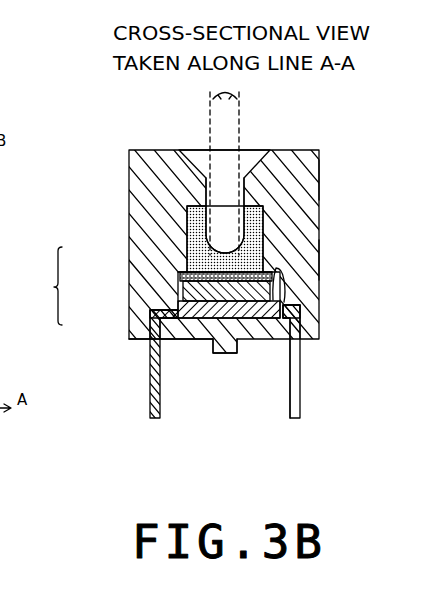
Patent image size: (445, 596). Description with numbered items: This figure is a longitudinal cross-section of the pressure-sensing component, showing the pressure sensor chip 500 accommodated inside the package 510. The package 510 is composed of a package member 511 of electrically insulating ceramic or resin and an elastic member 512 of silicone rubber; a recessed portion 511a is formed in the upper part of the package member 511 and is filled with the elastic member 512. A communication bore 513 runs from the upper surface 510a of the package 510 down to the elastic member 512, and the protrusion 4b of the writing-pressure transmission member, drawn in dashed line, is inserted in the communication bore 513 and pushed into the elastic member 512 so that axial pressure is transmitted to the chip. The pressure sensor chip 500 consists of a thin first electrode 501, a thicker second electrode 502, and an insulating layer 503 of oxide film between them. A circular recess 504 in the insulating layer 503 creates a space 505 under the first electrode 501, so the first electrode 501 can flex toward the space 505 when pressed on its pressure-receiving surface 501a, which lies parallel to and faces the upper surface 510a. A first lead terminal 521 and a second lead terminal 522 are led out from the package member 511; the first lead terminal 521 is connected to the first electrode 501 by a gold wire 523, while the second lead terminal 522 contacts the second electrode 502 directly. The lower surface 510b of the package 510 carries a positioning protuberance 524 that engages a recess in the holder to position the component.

The protrusion 4b is at (213, 112).
The communication bore 513 is at (228, 204).
The package 510 is at (125, 207).
The upper surface 510a is at (300, 149).
The lower surface of housing 510b is at (143, 340).
The package member 511 is at (313, 179).
The recessed portion 511a is at (266, 241).
The elastic member 512 is at (253, 222).
The pressure sensor chip 500 is at (53, 290).
The first electrode 501 is at (184, 276).
The pressure-receiving surface 501a is at (182, 271).
The second electrode 502 is at (192, 309).
The insulating layer 503 is at (190, 291).
The space 505 is at (280, 278).
The gold wire 523 is at (299, 313).
The recess 504 is at (300, 340).
The first lead terminal 521 is at (290, 405).
The second lead terminal 522 is at (160, 405).
The positioning protuberance 524 is at (238, 346).